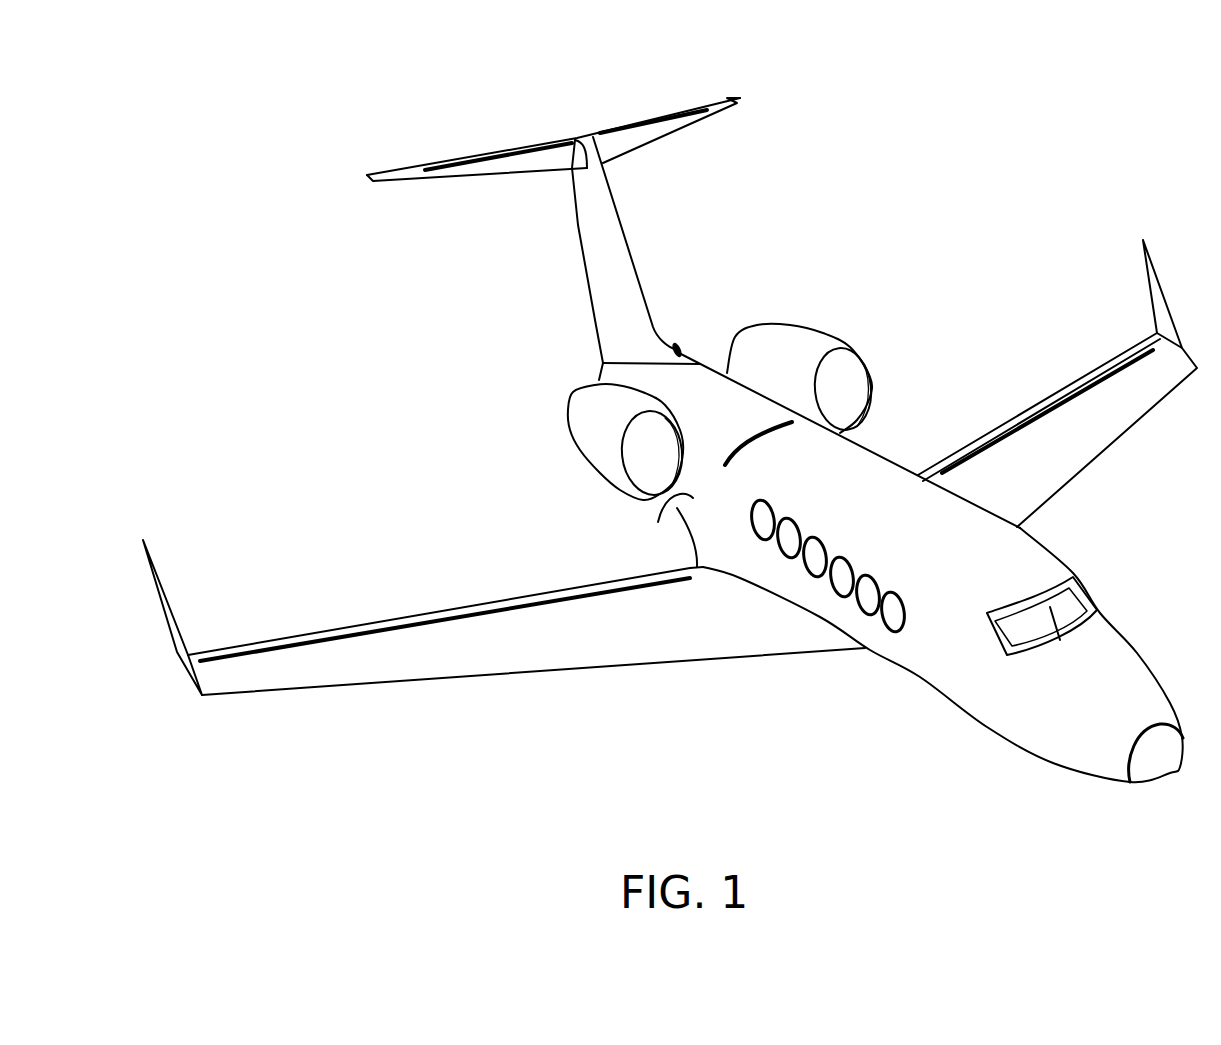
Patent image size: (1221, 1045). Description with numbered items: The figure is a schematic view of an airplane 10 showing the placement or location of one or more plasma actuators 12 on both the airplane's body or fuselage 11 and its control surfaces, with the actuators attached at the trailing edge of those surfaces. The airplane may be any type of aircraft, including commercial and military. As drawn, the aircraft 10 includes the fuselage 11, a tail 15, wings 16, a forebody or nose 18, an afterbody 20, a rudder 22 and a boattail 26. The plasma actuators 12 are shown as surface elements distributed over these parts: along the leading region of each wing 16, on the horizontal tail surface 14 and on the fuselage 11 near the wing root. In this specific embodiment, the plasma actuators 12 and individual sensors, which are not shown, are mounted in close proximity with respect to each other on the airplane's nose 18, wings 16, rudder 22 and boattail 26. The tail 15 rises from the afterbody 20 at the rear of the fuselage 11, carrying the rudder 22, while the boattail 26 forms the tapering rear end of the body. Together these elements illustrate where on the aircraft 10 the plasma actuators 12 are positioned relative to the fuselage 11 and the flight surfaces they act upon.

The airplane 10 is at (908, 519).
The fuselage 11 is at (700, 403).
The plasma actuator 12 is at (300, 637).
The horizontal stabilizer 14 is at (733, 103).
The tail 15 is at (593, 258).
The wings 16 is at (1077, 448).
The forebody (nose) 18 is at (1110, 663).
The afterbody 20 is at (657, 520).
The rudder 22 is at (607, 227).
The boattail 26 is at (597, 378).